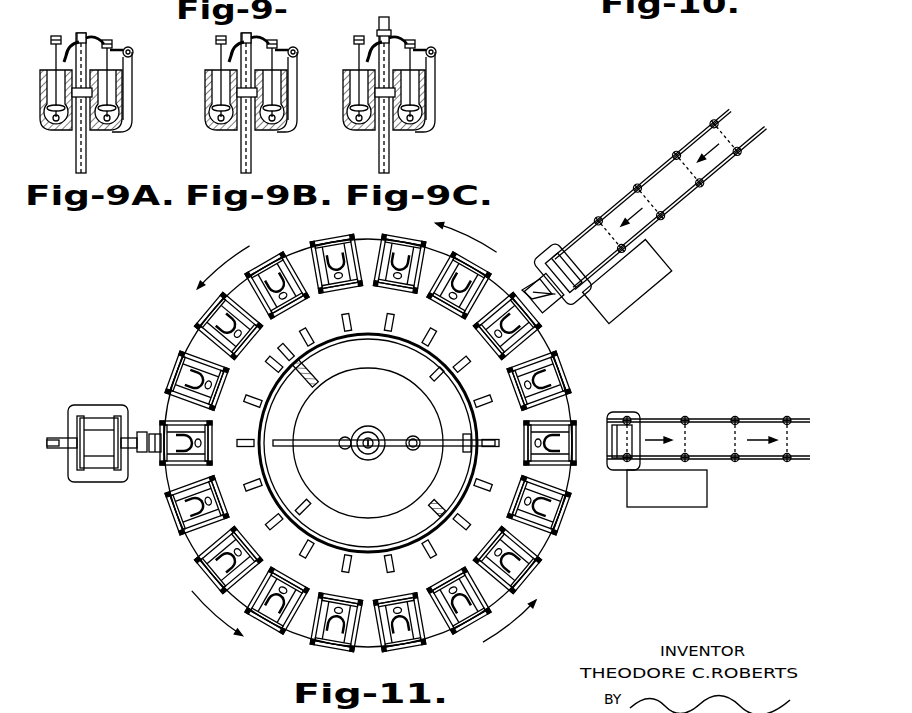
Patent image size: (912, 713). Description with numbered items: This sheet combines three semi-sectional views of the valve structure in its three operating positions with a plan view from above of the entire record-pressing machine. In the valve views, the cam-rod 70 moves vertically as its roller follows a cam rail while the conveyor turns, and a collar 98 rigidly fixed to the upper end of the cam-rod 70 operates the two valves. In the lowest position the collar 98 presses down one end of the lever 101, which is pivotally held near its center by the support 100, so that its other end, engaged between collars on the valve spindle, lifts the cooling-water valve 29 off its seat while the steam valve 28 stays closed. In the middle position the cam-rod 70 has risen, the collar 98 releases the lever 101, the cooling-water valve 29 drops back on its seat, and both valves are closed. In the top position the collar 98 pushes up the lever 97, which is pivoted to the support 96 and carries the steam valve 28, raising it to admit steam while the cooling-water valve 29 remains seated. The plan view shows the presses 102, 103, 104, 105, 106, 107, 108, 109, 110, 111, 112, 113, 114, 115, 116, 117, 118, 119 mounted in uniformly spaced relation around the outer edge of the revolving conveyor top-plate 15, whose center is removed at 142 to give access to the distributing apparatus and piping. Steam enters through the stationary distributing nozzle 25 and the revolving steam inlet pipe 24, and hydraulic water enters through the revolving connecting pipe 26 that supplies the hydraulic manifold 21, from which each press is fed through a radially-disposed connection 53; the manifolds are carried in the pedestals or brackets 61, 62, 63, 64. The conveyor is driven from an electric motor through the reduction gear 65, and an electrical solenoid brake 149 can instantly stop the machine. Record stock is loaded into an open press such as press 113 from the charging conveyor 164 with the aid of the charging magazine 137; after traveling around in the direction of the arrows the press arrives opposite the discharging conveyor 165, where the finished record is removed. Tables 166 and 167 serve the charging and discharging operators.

In FIG. 11, the conveyor top-plate 15 is at (204, 543).
In FIG. 11, the hydraulic manifold 21 is at (398, 335).
In FIG. 11, the steam inlet pipe 24 is at (290, 445).
In FIG. 11, the steam distributing nozzle 25 is at (370, 432).
In FIG. 11, the hydraulic connecting pipe 26 is at (438, 443).
In FIG. 9A, the steam valve 28 is at (116, 88).
In FIG. 9B, the steam valve 28 is at (290, 80).
In FIG. 9C, the steam valve 28 is at (433, 80).
In FIG. 9A, the cooling-water valve 29 is at (44, 92).
In FIG. 9B, the cooling-water valve 29 is at (234, 100).
In FIG. 9C, the cooling-water valve 29 is at (375, 100).
In FIG. 11, the radially-disposed connection 53 is at (335, 332).
In FIG. 11, the manifold pedestal or bracket 61 is at (311, 503).
In FIG. 11, the manifold pedestal or bracket 62 is at (435, 500).
In FIG. 11, the manifold pedestal or bracket 63 is at (432, 378).
In FIG. 11, the manifold pedestal or bracket 64 is at (321, 380).
In FIG. 11, the reduction gear 65 is at (100, 428).
In FIG. 9A, the cam-rod 70 is at (87, 152).
In FIG. 9B, the cam-rod 70 is at (263, 103).
In FIG. 9C, the cam-rod 70 is at (400, 95).
In FIG. 9A, the lever support 96 is at (132, 102).
In FIG. 9B, the lever support 96 is at (297, 89).
In FIG. 9C, the lever support 96 is at (440, 89).
In FIG. 9A, the steam-valve lever 97 is at (94, 37).
In FIG. 9B, the steam-valve lever 97 is at (269, 36).
In FIG. 9C, the steam-valve lever 97 is at (410, 31).
In FIG. 9A, the collar 98 is at (79, 42).
In FIG. 9B, the collar 98 is at (234, 44).
In FIG. 9C, the collar 98 is at (368, 37).
In FIG. 9A, the lever support 100 is at (54, 60).
In FIG. 9B, the lever support 100 is at (208, 82).
In FIG. 9C, the lever support 100 is at (347, 82).
In FIG. 9A, the cooling-water valve lever 101 is at (51, 42).
In FIG. 9B, the cooling-water valve lever 101 is at (206, 45).
In FIG. 9C, the cooling-water valve lever 101 is at (345, 45).
In FIG. 11, the press 102 is at (213, 440).
In FIG. 11, the press 103 is at (226, 494).
In FIG. 11, the press 104 is at (275, 525).
In FIG. 11, the press 105 is at (296, 585).
In FIG. 11, the press 106 is at (345, 600).
In FIG. 11, the press 107 is at (404, 600).
In FIG. 11, the press 108 is at (450, 578).
In FIG. 11, the press 109 is at (493, 538).
In FIG. 11, the press 110 is at (520, 490).
In FIG. 11, the press 111 is at (524, 436).
In FIG. 11, the press 112 is at (514, 382).
In FIG. 11, the press 113 is at (484, 336).
In FIG. 11, the press 114 is at (452, 305).
In FIG. 11, the press 115 is at (392, 288).
In FIG. 11, the press 116 is at (336, 288).
In FIG. 11, the press 117 is at (290, 308).
In FIG. 11, the press 118 is at (249, 340).
In FIG. 11, the press 119 is at (226, 384).
In FIG. 11, the charging magazine 137 is at (534, 290).
In FIG. 11, the removed center of top-plate 142 is at (356, 360).
In FIG. 11, the electrical solenoid brake 149 is at (147, 457).
In FIG. 11, the charging conveyor 164 is at (640, 203).
In FIG. 11, the discharging conveyor 165 is at (708, 431).
In FIG. 11, the charging table 166 is at (627, 282).
In FIG. 11, the discharging table 167 is at (667, 488).